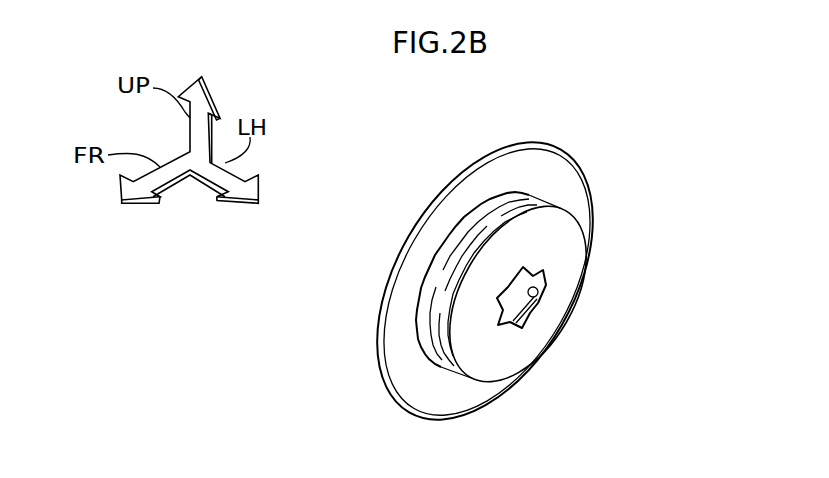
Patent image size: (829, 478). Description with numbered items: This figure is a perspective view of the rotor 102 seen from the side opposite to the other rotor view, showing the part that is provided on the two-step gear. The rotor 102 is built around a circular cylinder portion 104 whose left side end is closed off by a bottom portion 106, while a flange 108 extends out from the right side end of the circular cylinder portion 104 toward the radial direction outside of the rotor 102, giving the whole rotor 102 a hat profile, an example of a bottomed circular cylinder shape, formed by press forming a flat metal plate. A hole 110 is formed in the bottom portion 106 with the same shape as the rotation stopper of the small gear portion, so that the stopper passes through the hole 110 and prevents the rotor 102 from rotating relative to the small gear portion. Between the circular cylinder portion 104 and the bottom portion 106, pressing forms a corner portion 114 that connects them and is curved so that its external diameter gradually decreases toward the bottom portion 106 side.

The rotor 102 is at (620, 142).
The circular cylinder portion 104 is at (473, 240).
The bottom portion 106 is at (527, 350).
The flange 108 is at (542, 160).
The hole 110 is at (546, 302).
The corner portion 114 is at (427, 353).